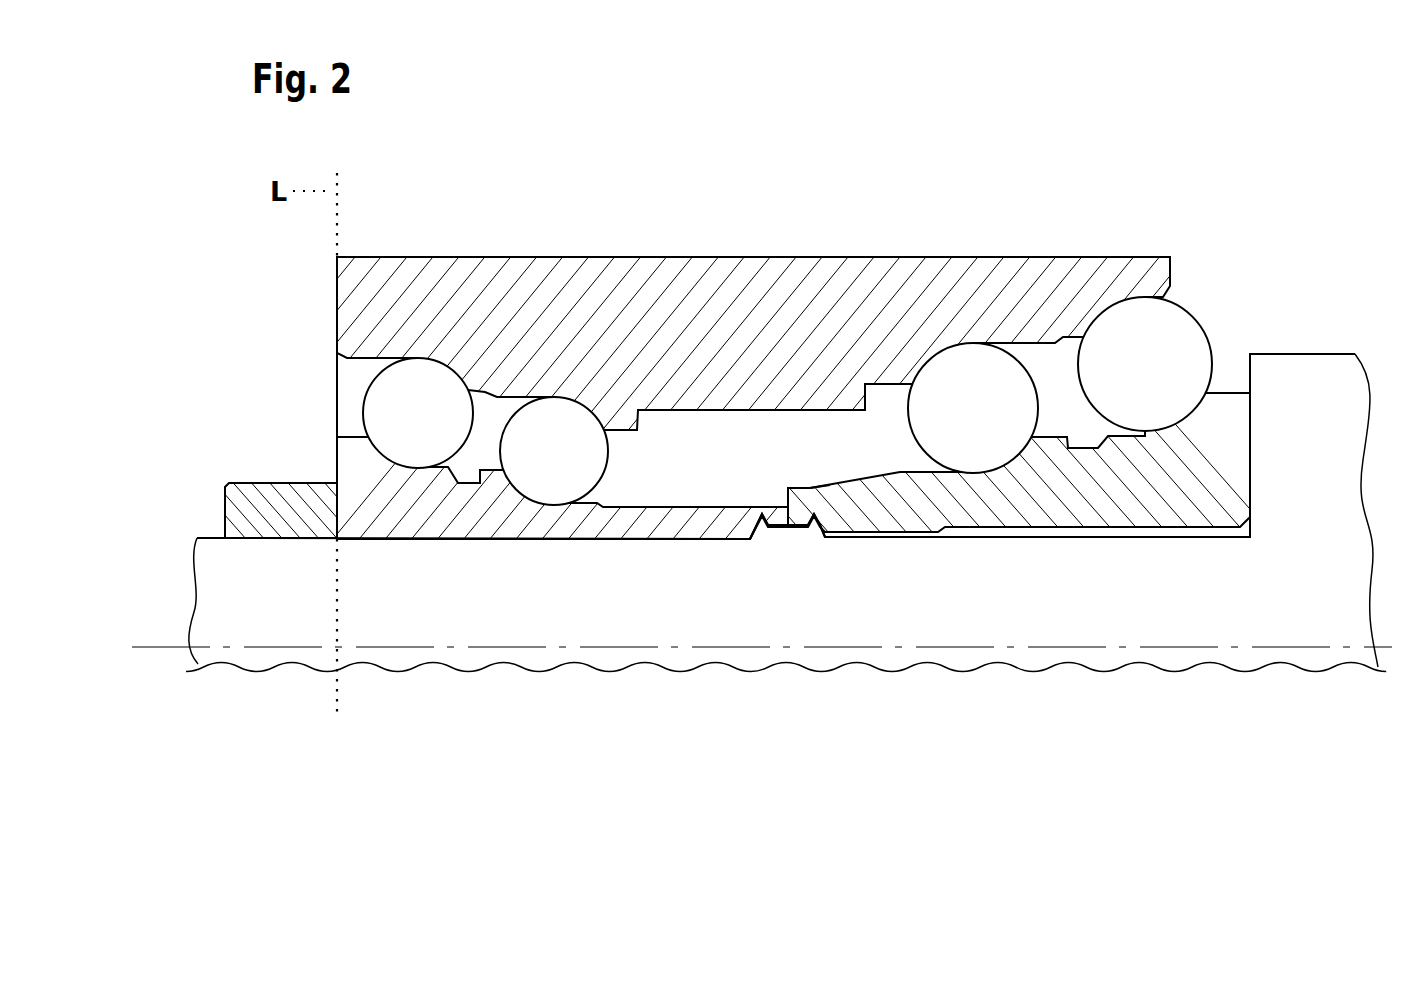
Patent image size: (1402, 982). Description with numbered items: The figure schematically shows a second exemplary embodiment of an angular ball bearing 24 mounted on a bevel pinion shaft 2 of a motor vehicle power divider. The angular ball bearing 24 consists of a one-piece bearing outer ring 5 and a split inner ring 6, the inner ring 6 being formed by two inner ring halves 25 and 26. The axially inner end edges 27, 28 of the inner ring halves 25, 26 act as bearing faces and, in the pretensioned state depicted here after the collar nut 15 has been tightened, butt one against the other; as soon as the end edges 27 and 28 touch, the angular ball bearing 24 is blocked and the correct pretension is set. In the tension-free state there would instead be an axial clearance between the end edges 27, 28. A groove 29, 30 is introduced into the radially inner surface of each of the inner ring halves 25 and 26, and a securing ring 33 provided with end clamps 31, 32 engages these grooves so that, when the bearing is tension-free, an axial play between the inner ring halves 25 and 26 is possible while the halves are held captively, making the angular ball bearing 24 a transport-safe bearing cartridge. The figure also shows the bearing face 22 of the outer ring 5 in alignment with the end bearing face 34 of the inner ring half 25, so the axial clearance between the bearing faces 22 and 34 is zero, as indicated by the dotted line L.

The bevel pinion shaft 2 is at (168, 598).
The bearing outer ring 5 is at (755, 318).
The split inner ring 6 is at (300, 417).
The collar nut 15 is at (256, 513).
The bearing face 22 is at (337, 298).
The angular ball bearing 24 is at (1213, 259).
The inner ring half 25 is at (473, 513).
The inner ring half 26 is at (1105, 508).
The axially inner end edge 27 is at (804, 500).
The axially inner end edge 28 is at (787, 505).
The groove 29 is at (741, 513).
The groove 30 is at (829, 510).
The end clamp 31 is at (763, 527).
The end clamp 32 is at (813, 527).
The securing ring 33 is at (788, 523).
The end bearing face 34 is at (337, 453).